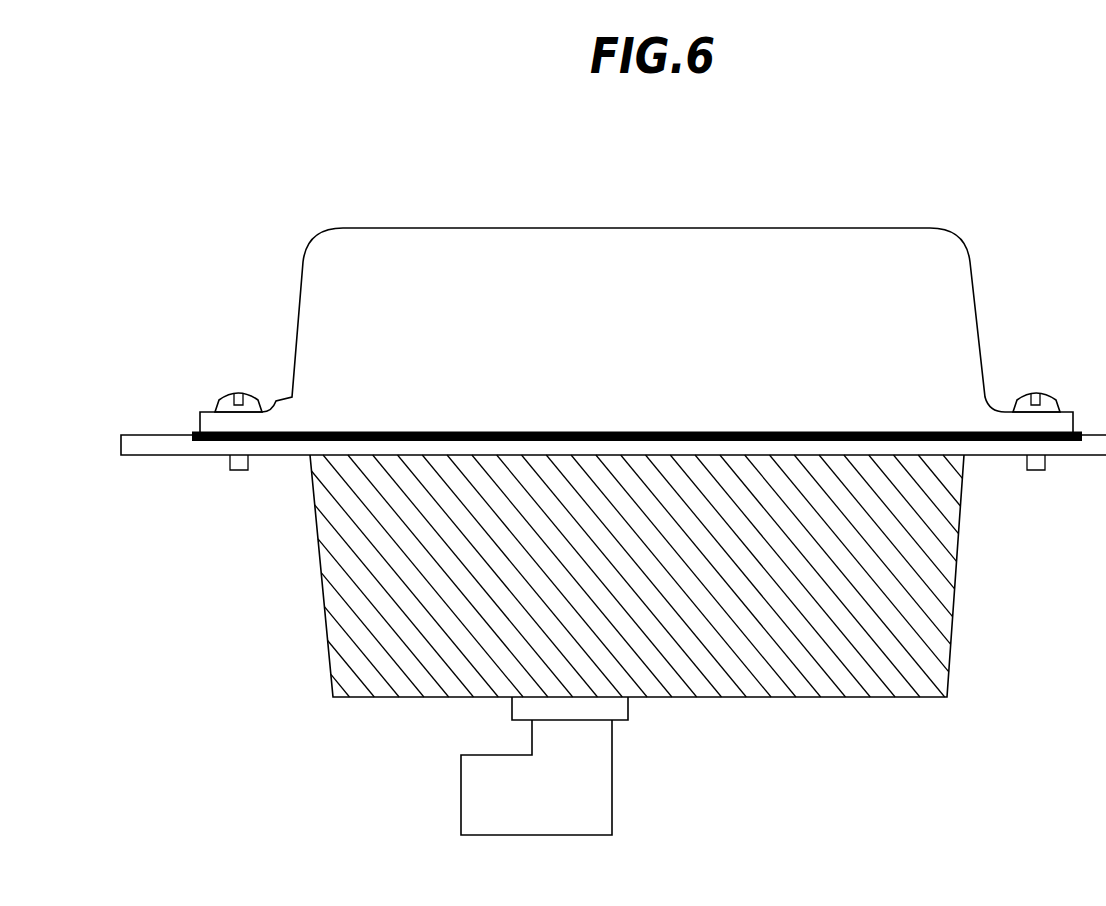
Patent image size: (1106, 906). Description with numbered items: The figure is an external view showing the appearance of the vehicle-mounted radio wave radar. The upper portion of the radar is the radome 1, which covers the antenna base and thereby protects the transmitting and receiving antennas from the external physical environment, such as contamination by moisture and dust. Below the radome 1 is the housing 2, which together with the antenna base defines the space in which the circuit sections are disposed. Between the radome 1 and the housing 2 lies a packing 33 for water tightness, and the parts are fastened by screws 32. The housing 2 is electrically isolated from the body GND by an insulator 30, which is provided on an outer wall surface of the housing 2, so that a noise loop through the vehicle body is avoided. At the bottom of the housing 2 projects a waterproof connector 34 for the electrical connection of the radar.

The radome 1 is at (972, 268).
The housing 2 is at (980, 455).
The insulator 30 is at (338, 601).
The screw 32 is at (222, 394).
The packing 33 is at (285, 441).
The waterproof connector 34 is at (477, 787).